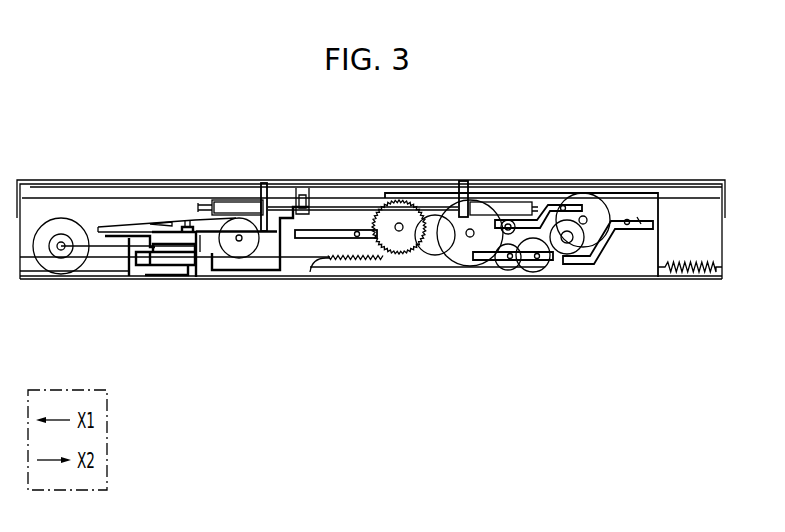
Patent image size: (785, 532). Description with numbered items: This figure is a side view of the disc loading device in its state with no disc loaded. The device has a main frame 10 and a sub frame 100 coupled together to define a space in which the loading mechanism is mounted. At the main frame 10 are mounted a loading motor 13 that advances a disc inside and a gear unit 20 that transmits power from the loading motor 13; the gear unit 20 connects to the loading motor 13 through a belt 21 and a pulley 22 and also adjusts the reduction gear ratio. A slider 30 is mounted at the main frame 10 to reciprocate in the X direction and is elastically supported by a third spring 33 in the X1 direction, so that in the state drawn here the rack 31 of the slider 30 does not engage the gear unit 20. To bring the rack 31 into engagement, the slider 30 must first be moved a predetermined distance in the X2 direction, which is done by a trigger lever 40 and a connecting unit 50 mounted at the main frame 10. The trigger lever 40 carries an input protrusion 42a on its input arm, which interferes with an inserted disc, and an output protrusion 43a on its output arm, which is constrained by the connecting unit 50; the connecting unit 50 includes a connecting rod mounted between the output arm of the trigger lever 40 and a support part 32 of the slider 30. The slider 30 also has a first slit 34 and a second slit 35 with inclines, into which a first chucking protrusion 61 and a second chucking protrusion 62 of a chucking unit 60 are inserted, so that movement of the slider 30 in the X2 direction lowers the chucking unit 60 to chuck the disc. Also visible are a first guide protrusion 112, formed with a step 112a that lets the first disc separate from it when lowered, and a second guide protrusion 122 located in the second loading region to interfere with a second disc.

The sub frame 100 is at (693, 181).
The main frame 10 is at (720, 279).
The pulley 22 is at (54, 233).
The loading motor 13 is at (56, 268).
The belt 21 is at (89, 231).
The trigger lever 40 is at (200, 230).
The output protrusion 43a is at (123, 268).
The connecting unit 50 is at (152, 272).
The support part 32 is at (221, 268).
The input protrusion 42a is at (258, 222).
The first guide protrusion 112 is at (292, 196).
The step 112a is at (316, 203).
The slider 30 is at (278, 252).
The rack 31 is at (318, 268).
The gear unit 20 is at (421, 257).
The second guide protrusion 122 is at (458, 192).
The chucking unit 60 is at (503, 194).
The first slit 34 is at (546, 208).
The first chucking protrusion 61 is at (565, 207).
The second chucking protrusion 62 is at (628, 220).
The second slit 35 is at (603, 252).
The third spring 33 is at (686, 272).